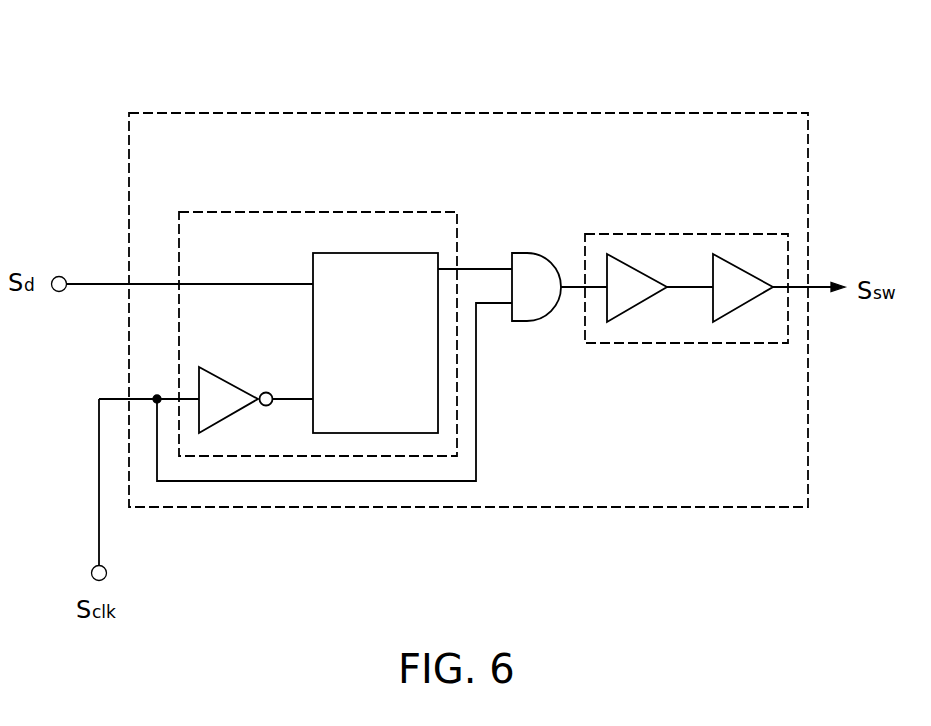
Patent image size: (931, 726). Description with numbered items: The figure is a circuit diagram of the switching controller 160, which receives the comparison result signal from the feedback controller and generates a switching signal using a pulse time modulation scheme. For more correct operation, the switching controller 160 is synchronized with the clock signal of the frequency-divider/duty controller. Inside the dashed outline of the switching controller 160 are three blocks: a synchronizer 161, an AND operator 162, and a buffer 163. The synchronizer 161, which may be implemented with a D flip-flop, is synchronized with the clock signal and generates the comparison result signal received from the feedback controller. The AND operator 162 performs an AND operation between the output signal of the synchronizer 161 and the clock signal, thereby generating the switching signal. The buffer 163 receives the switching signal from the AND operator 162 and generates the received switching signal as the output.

The switching controller 160 is at (395, 113).
The synchronizer 161 is at (410, 212).
The AND operator 162 is at (530, 252).
The buffer 163 is at (692, 233).